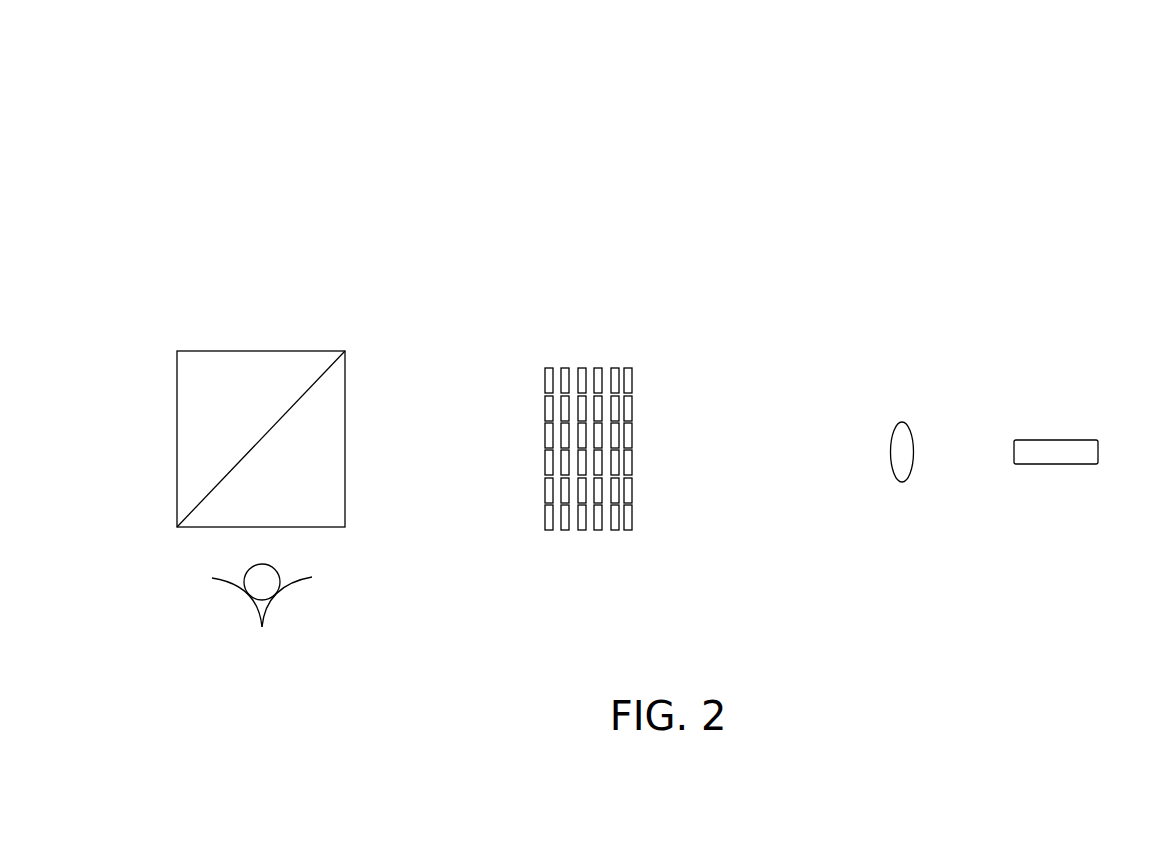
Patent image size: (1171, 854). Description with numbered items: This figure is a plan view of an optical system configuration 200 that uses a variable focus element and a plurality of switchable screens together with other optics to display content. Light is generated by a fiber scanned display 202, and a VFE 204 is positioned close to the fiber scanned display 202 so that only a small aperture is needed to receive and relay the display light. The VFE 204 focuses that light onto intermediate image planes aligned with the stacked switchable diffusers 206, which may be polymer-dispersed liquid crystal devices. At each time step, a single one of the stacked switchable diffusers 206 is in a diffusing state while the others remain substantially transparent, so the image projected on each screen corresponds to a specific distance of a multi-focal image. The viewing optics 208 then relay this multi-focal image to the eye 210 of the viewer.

The display system 200 is at (1017, 72).
The fiber scanned display 202 is at (1056, 422).
The VFE 204 is at (898, 500).
The stacked switchable diffusers 206 is at (591, 350).
The viewing optics 208 is at (258, 351).
The eye 210 is at (256, 607).